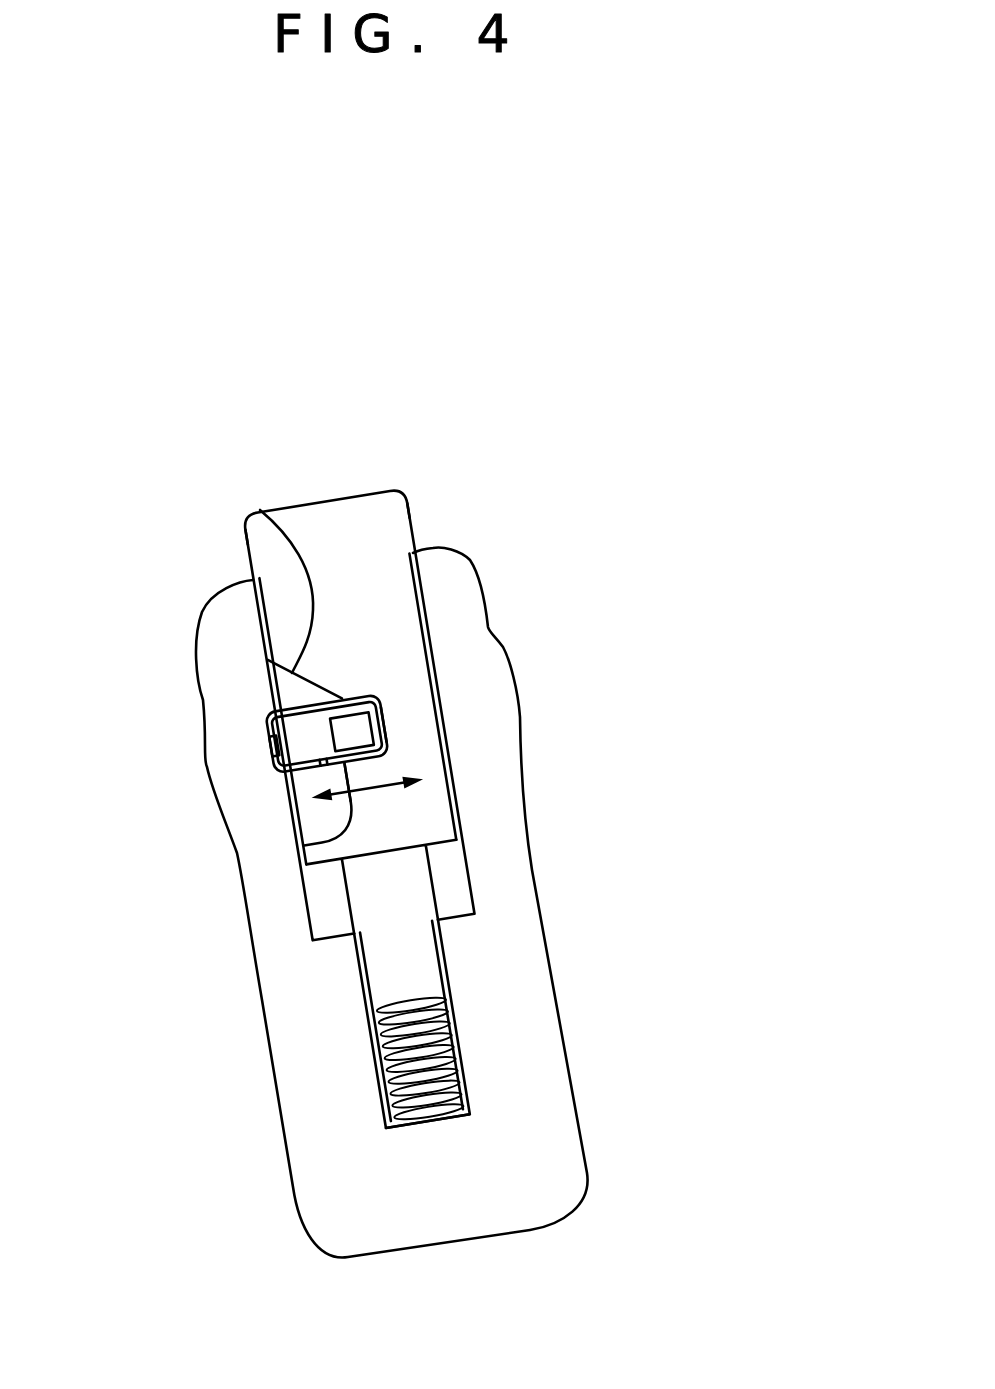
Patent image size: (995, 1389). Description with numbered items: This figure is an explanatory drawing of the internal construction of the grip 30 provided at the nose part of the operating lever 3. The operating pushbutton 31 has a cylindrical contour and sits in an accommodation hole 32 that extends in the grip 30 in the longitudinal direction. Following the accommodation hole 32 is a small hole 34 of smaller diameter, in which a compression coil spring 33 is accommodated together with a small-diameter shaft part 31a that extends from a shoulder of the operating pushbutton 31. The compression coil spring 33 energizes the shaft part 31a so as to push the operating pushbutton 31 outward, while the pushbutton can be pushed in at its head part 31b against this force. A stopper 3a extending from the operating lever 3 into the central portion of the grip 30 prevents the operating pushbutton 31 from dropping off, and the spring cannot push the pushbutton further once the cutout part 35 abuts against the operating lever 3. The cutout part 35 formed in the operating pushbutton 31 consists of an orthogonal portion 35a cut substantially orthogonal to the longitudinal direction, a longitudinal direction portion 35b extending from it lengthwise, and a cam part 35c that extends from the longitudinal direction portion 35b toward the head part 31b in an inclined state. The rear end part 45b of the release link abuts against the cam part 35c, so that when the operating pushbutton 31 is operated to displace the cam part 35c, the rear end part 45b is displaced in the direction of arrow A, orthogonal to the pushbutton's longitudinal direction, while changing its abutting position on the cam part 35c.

The grip 30 is at (550, 908).
The operating pushbutton 31 is at (407, 513).
The shaft part 31a is at (380, 963).
The head part 31b is at (316, 497).
The accommodation hole 32 is at (450, 855).
The compression coil spring 33 is at (427, 1083).
The small hole 34 is at (466, 1060).
The cutout part 35 is at (262, 678).
The orthogonal portion 35a is at (360, 768).
The longitudinal direction portion 35b is at (386, 723).
The cam part 35c is at (260, 510).
The operating lever 3 is at (265, 730).
The stopper 3a is at (268, 762).
The rear end part 45b is at (357, 735).
The direction of arrow A is at (305, 845).